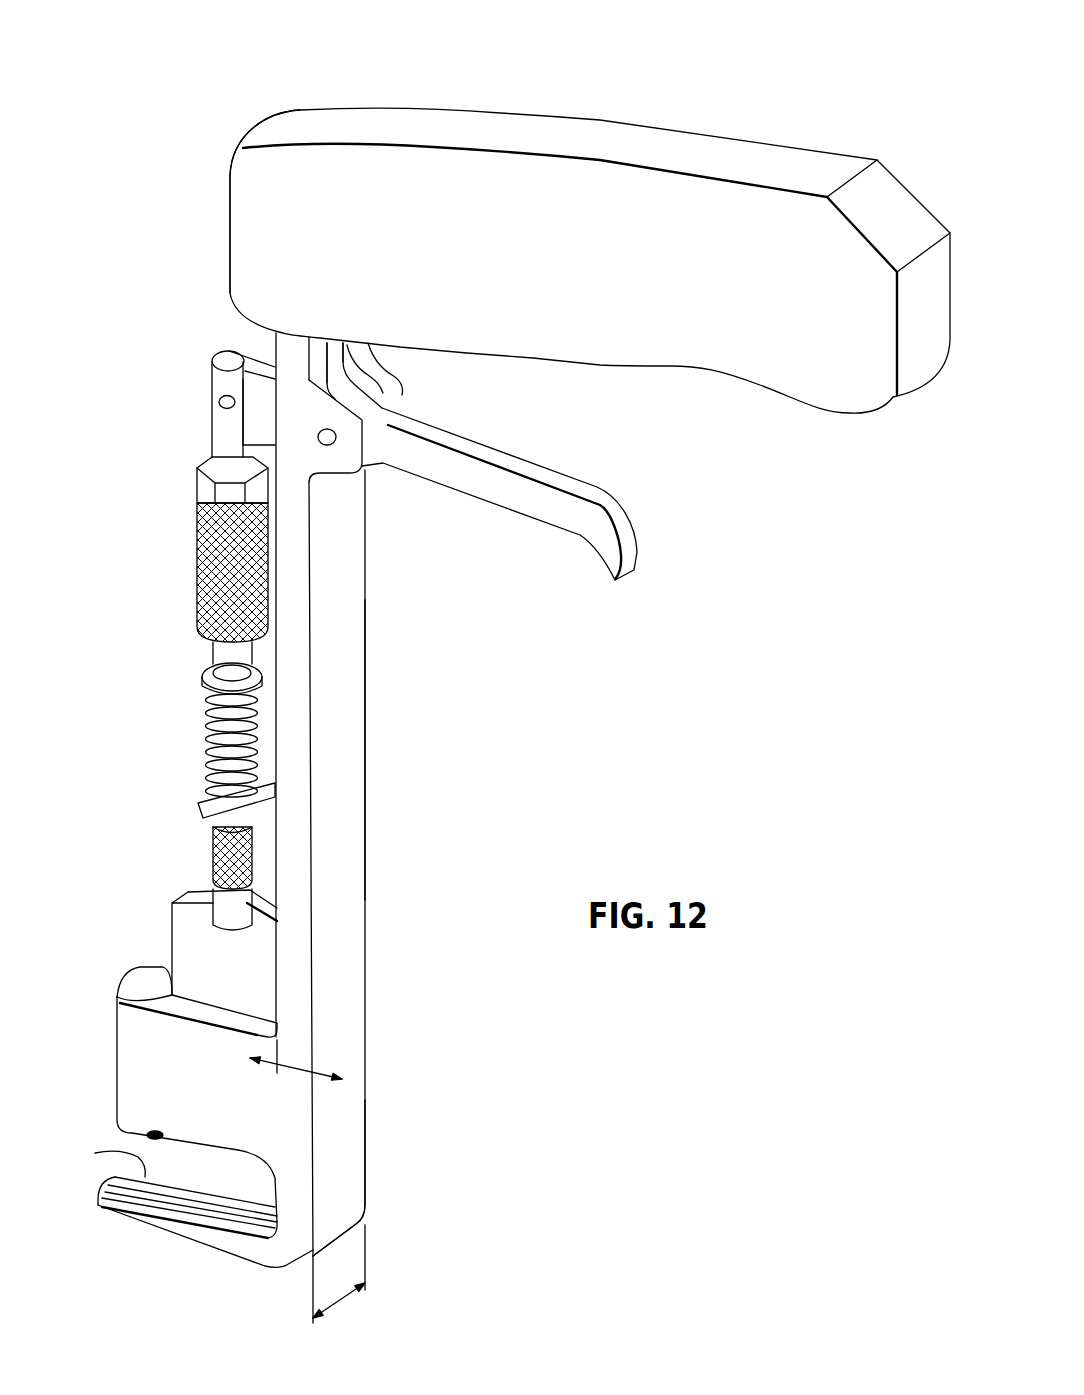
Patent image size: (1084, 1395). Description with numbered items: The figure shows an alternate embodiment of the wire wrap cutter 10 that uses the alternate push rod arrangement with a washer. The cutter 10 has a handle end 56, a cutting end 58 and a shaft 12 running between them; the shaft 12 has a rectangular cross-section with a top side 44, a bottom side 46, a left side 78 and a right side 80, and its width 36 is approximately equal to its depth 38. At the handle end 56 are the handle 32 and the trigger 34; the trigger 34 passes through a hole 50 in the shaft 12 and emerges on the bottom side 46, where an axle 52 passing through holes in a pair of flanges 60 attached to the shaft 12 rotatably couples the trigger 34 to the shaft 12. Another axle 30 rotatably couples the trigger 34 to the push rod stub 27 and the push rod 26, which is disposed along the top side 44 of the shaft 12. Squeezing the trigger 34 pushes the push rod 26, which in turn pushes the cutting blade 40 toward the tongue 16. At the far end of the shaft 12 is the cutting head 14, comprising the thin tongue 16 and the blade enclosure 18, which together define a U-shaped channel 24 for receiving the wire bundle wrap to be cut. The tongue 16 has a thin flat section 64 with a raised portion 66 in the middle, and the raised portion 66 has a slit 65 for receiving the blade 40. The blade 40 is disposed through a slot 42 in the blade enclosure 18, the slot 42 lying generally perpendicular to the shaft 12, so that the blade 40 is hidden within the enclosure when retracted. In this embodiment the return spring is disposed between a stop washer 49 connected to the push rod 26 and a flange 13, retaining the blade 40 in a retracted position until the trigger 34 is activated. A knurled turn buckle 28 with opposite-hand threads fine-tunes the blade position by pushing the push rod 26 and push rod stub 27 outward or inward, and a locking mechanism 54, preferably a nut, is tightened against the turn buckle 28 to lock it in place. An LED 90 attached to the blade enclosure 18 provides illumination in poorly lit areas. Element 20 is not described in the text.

The cutter 10 is at (136, 92).
The shaft 12 is at (345, 835).
The flange 13 is at (200, 808).
The cutting head 14 is at (405, 1190).
The tongue 16 is at (96, 1228).
The blade enclosure 18 is at (160, 1046).
The rounded cap 20 is at (120, 983).
The U-shaped channel 24 is at (128, 1142).
The push rod 26 is at (205, 656).
The push rod stub 27 is at (210, 438).
The turn buckle 28 is at (205, 570).
The axle 30 is at (220, 407).
The handle 32 is at (805, 165).
The trigger 34 is at (593, 535).
The width 36 is at (342, 1290).
The depth 38 is at (296, 1072).
The cutting blade 40 is at (172, 940).
The slot 42 is at (263, 1013).
The top side 44 is at (302, 578).
The bottom side 46 is at (350, 742).
The stop washer 49 is at (200, 675).
The hole 50 is at (338, 373).
The axle 52 is at (327, 434).
The locking mechanism 54 is at (198, 485).
The handle end 56 is at (188, 237).
The cutting end 58 is at (500, 1210).
The flanges 60 is at (385, 405).
The thin flat section 64 is at (228, 1233).
The slit 65 is at (118, 1158).
The raised portion 66 is at (120, 1207).
The left side 78 is at (292, 1120).
The right side 80 is at (355, 1002).
The LED 90 is at (160, 1138).